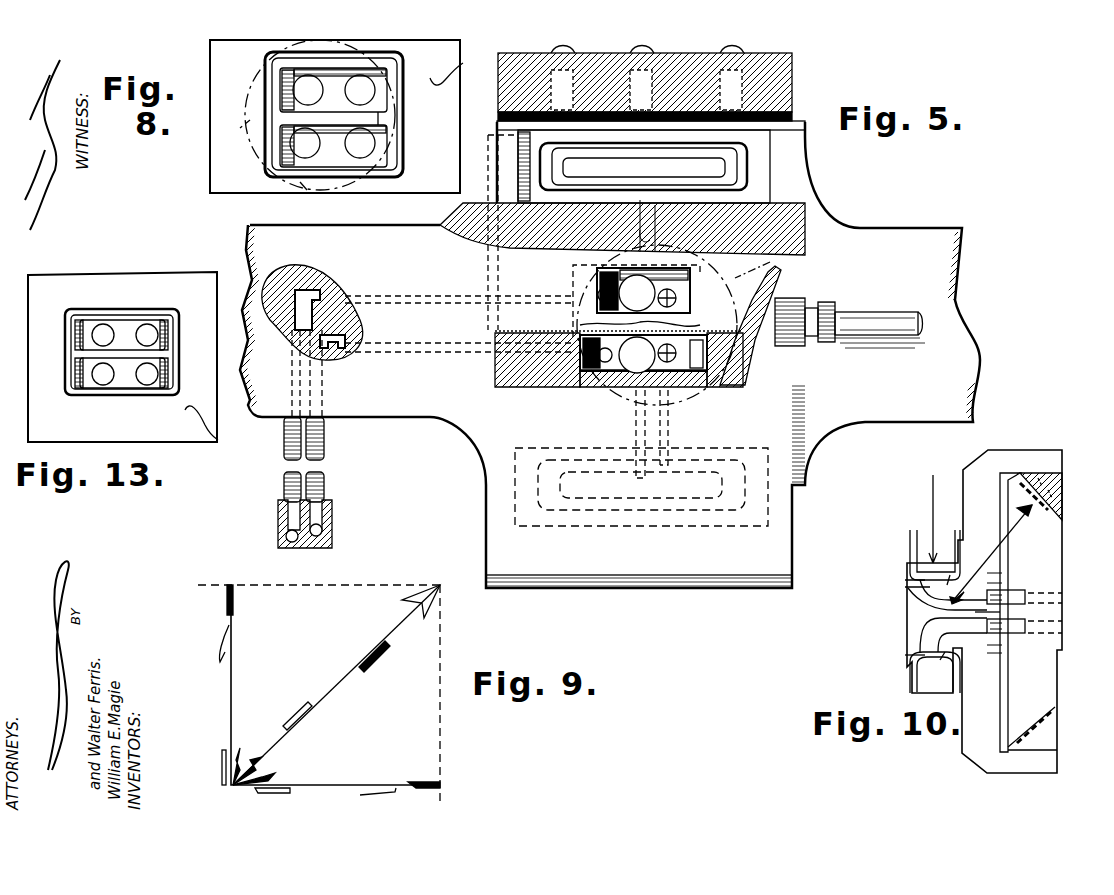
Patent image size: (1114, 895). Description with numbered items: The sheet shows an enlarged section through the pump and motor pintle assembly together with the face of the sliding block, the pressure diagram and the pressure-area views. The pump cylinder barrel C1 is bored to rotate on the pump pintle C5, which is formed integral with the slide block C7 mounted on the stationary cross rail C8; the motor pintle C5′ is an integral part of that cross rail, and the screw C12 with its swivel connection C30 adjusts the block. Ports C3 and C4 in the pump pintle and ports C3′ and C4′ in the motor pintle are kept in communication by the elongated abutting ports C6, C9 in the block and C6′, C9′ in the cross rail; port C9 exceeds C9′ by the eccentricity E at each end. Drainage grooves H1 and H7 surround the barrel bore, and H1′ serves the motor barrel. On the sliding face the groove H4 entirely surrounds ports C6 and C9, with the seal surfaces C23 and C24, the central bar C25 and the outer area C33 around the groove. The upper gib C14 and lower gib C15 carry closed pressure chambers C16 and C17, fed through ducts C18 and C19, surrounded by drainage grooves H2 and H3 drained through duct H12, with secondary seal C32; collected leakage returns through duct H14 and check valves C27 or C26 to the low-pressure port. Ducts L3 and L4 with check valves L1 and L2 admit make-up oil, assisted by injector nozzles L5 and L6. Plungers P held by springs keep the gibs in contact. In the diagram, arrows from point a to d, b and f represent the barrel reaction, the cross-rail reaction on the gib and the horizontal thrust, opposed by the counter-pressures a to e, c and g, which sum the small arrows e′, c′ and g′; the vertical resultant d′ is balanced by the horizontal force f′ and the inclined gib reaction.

In FIG. 8, the slide block C7 is at (212, 181).
In FIG. 13, the slide block C7 is at (185, 445).
In FIG. 10, the slide block C7 is at (968, 743).
In FIG. 5, the slide block C7 is at (795, 80).
In FIG. 8, the drainage groove H1 is at (373, 50).
In FIG. 10, the drainage groove H1 is at (958, 568).
In FIG. 8, the rectangular drainage groove H4 is at (398, 72).
In FIG. 13, the rectangular drainage groove H4 is at (92, 312).
In FIG. 5, the rectangular drainage groove H4 is at (495, 338).
In FIG. 8, the elongated port C6 is at (300, 100).
In FIG. 8, the pump-pintle port C3 is at (300, 107).
In FIG. 8, the pump-pintle port C4 is at (358, 158).
In FIG. 5, the pump-pintle port C4 is at (590, 382).
In FIG. 8, the elongated port C9 is at (382, 153).
In FIG. 5, the elongated port C9 is at (745, 390).
In FIG. 8, the pump pintle C5 is at (362, 186).
In FIG. 5, the pump pintle C5 is at (778, 250).
In FIG. 8, the motor pintle C5′ is at (240, 128).
In FIG. 5, the motor pintle C5′ is at (772, 262).
In FIG. 8, the secondary oil seal area C33 is at (463, 66).
In FIG. 13, the secondary oil seal area C33 is at (218, 428).
In FIG. 5, the secondary oil seal area C33 is at (312, 312).
In FIG. 8, the drainage groove H1′ is at (307, 190).
In FIG. 13, the oil seal surface C23 is at (115, 318).
In FIG. 13, the central bar C25 is at (158, 358).
In FIG. 5, the central bar C25 is at (572, 500).
In FIG. 13, the oil seal surface C24 is at (118, 388).
In FIG. 5, the oil seal surface C24 is at (600, 160).
In FIG. 5, the swivel connection C30 is at (675, 130).
In FIG. 5, the plunger P is at (768, 130).
In FIG. 5, the closed pressure chamber C16 is at (742, 160).
In FIG. 5, the duct C18 is at (572, 258).
In FIG. 10, the upper gib C14 is at (1052, 473).
In FIG. 5, the upper gib C14 is at (475, 242).
In FIG. 5, the duct H12 is at (640, 232).
In FIG. 5, the drainage groove H2 is at (728, 195).
In FIG. 5, the check valve C26 is at (700, 260).
In FIG. 5, the screw C12 is at (875, 312).
In FIG. 5, the motor-pintle port C3′ is at (643, 290).
In FIG. 5, the motor-pintle port C4′ is at (643, 347).
In FIG. 5, the eccentricity distance E is at (700, 318).
In FIG. 5, the injector nozzle L5 is at (598, 295).
In FIG. 5, the check valve C27 is at (685, 382).
In FIG. 5, the elongated port C6′ is at (790, 346).
In FIG. 10, the stationary cross rail C8 is at (1050, 560).
In FIG. 5, the stationary cross rail C8 is at (875, 420).
In FIG. 5, the elongated port C9′ is at (492, 372).
In FIG. 5, the injector nozzle L6 is at (582, 375).
In FIG. 5, the duct C19 is at (600, 392).
In FIG. 5, the duct H14 is at (642, 395).
In FIG. 10, the lower gib C15 is at (1036, 750).
In FIG. 5, the lower gib C15 is at (612, 512).
In FIG. 5, the closed pressure chamber C17 is at (686, 492).
In FIG. 5, the drainage groove H3 is at (718, 505).
In FIG. 5, the secondary oil seal C32 is at (740, 505).
In FIG. 5, the duct L3 is at (380, 292).
In FIG. 5, the duct L4 is at (420, 360).
In FIG. 5, the check valve L1 is at (280, 535).
In FIG. 5, the check valve L2 is at (328, 528).
In FIG. 9, the diagram origin point a is at (327, 696).
In FIG. 10, the diagram origin point a is at (947, 616).
In FIG. 9, the diagram point b is at (441, 586).
In FIG. 10, the diagram point b is at (1000, 553).
In FIG. 9, the diagram point c is at (392, 650).
In FIG. 9, the diagram point d is at (310, 588).
In FIG. 9, the diagram point e is at (229, 623).
In FIG. 9, the diagram point f is at (447, 700).
In FIG. 9, the diagram point g is at (398, 790).
In FIG. 10, the counter-pressure arrows c′ is at (1060, 482).
In FIG. 10, the vertical force arrow d′ is at (931, 506).
In FIG. 10, the counter-pressure arrows e′ is at (926, 596).
In FIG. 10, the horizontal force arrow f′ is at (1062, 602).
In FIG. 10, the counter-pressure arrows g′ is at (980, 613).
In FIG. 10, the pump cylinder barrel C1 is at (910, 548).
In FIG. 10, the drainage groove H7 is at (910, 580).